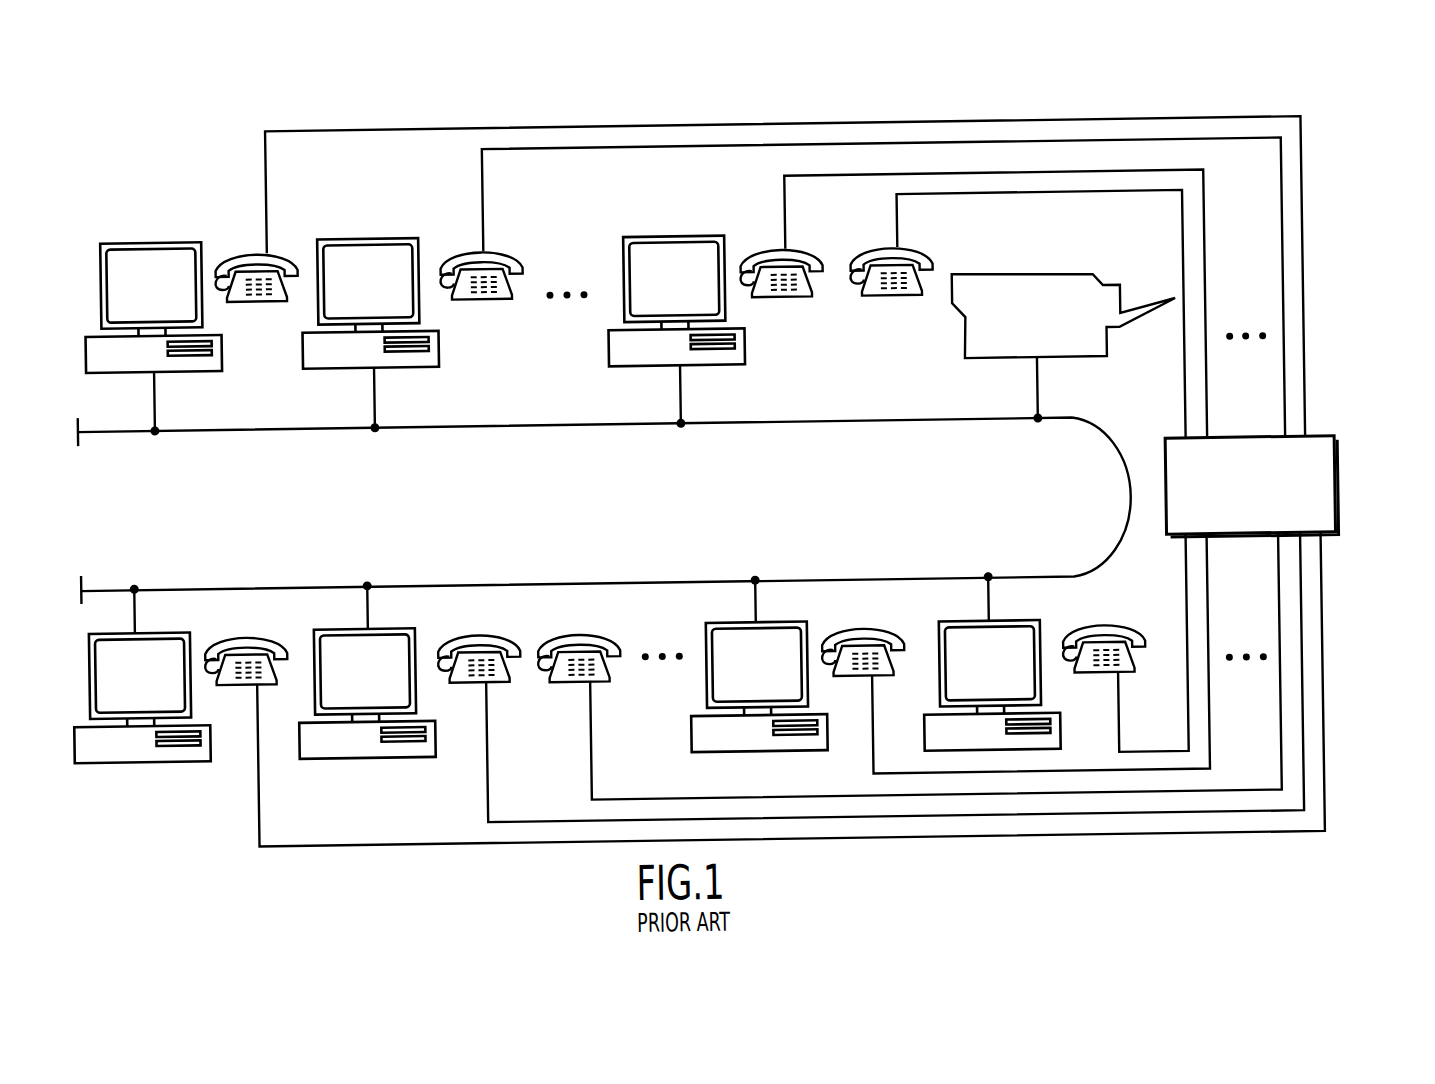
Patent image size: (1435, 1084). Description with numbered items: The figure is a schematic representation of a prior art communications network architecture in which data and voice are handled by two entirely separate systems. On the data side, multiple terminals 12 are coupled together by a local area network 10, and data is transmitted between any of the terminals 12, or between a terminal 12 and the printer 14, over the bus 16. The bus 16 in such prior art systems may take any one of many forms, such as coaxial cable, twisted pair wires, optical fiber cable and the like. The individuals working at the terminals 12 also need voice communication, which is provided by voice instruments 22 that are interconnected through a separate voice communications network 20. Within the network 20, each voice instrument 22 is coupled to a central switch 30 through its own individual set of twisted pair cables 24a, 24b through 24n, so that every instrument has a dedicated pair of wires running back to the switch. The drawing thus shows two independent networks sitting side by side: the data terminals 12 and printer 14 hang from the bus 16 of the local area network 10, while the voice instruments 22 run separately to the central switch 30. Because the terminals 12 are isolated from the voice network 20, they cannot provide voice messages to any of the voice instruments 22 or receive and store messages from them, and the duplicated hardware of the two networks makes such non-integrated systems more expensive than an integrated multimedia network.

The local area network 10 is at (254, 461).
The terminal 12 is at (156, 235).
The printer 14 is at (1036, 278).
The bus 16 is at (907, 422).
The voice communications network 20 is at (1333, 366).
The voice instrument 22 is at (284, 247).
The twisted pair cable 24a is at (684, 125).
The twisted pair cable 24b is at (877, 146).
The twisted pair cable 24n is at (262, 806).
The central switch 30 is at (1243, 445).